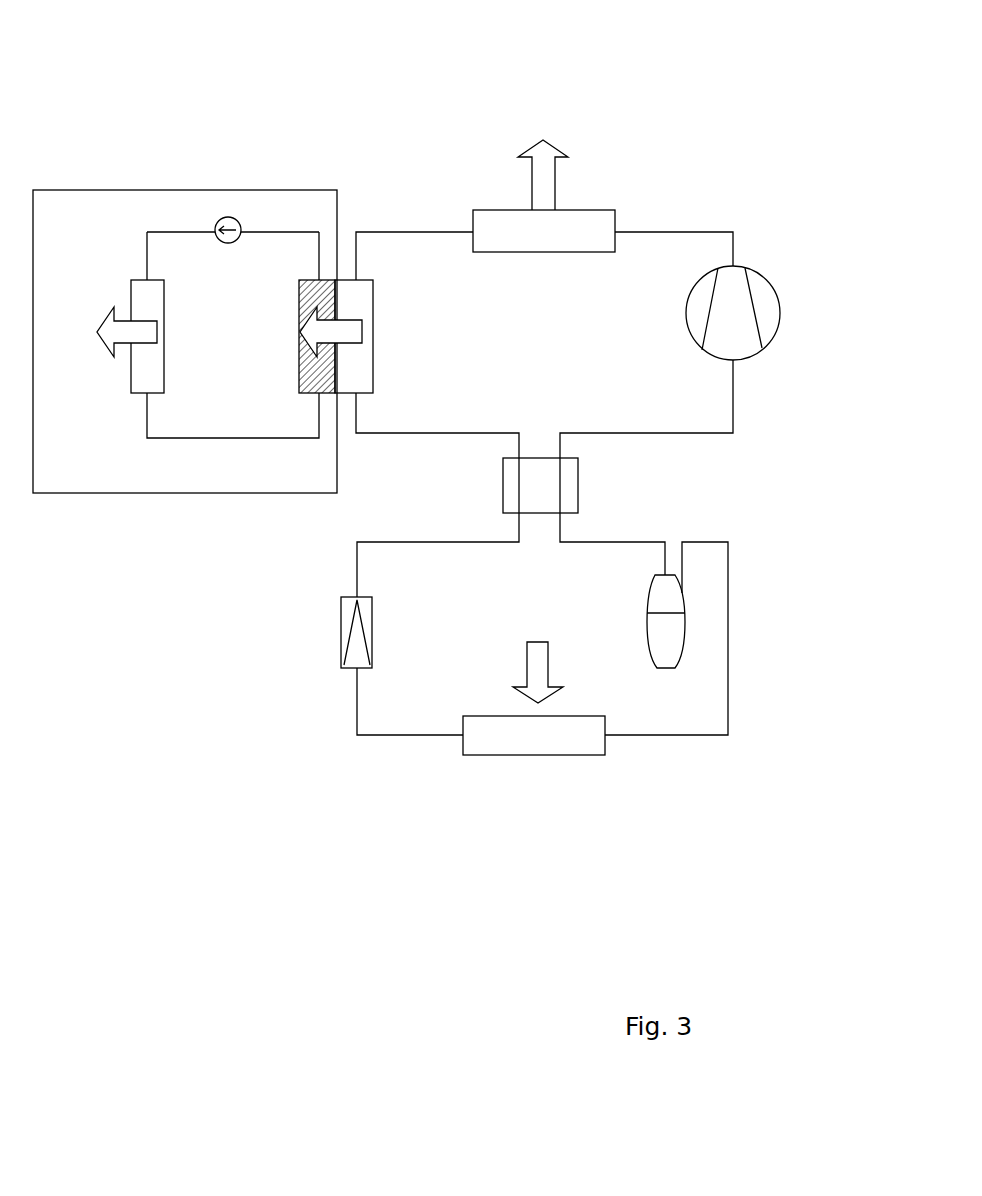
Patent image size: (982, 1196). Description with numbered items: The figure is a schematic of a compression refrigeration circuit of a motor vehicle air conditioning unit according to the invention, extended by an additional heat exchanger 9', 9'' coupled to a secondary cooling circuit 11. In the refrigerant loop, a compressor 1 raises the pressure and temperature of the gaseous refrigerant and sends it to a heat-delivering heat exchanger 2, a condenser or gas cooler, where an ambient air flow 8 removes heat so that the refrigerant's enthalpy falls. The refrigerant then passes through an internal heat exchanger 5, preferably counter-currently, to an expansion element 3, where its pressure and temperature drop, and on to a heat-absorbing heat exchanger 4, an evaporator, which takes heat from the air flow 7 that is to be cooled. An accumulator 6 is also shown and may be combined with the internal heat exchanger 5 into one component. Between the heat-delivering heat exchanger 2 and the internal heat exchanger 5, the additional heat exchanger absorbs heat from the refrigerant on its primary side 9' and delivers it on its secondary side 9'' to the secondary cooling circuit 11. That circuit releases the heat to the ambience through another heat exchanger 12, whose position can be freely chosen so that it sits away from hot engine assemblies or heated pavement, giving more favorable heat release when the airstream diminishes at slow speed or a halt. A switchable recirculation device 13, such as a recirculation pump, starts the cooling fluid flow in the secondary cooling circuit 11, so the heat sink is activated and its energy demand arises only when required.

The compressor 1 is at (758, 295).
The heat-delivering heat exchanger 2 is at (593, 232).
The expansion element 3 is at (357, 647).
The heat-absorbing heat exchanger 4 is at (548, 745).
The internal heat exchanger 5 is at (570, 477).
The accumulator 6 is at (667, 642).
The air flow 7 is at (538, 662).
The ambient air flow 8 is at (543, 170).
The primary side of additional heat exchanger 9' is at (376, 216).
The secondary side of additional heat exchanger 9'' is at (276, 440).
The secondary cooling circuit 11 is at (168, 210).
The heat-delivering heat exchanger of secondary cooling circuit 12 is at (147, 374).
The switchable recirculation device 13 is at (229, 217).